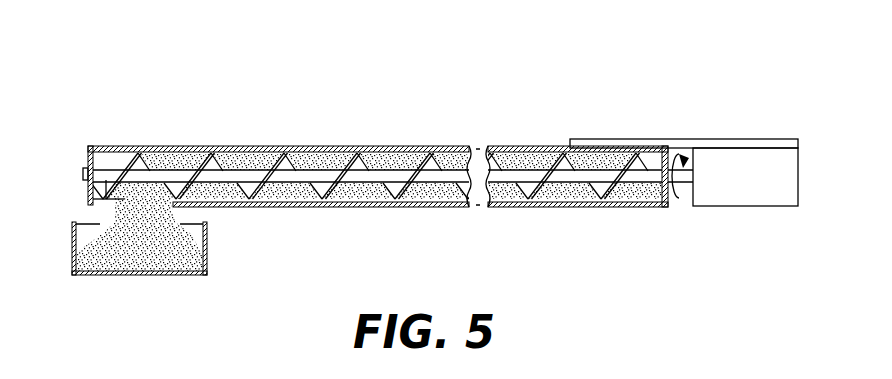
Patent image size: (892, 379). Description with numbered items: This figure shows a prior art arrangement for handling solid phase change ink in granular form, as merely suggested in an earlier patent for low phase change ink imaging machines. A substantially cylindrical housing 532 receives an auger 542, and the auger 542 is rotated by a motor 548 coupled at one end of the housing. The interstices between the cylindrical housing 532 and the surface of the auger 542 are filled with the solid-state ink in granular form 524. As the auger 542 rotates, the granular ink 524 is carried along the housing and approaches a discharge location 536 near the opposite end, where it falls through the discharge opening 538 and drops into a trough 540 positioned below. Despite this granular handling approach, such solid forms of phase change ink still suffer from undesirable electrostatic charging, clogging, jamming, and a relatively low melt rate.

The solid-state ink in granular form 524 is at (245, 155).
The cylindrical housing 532 is at (390, 148).
The auger 542 is at (433, 152).
The discharge location 536 is at (140, 188).
The discharge opening 538 is at (92, 204).
The trough 540 is at (207, 247).
The motor 548 is at (732, 198).